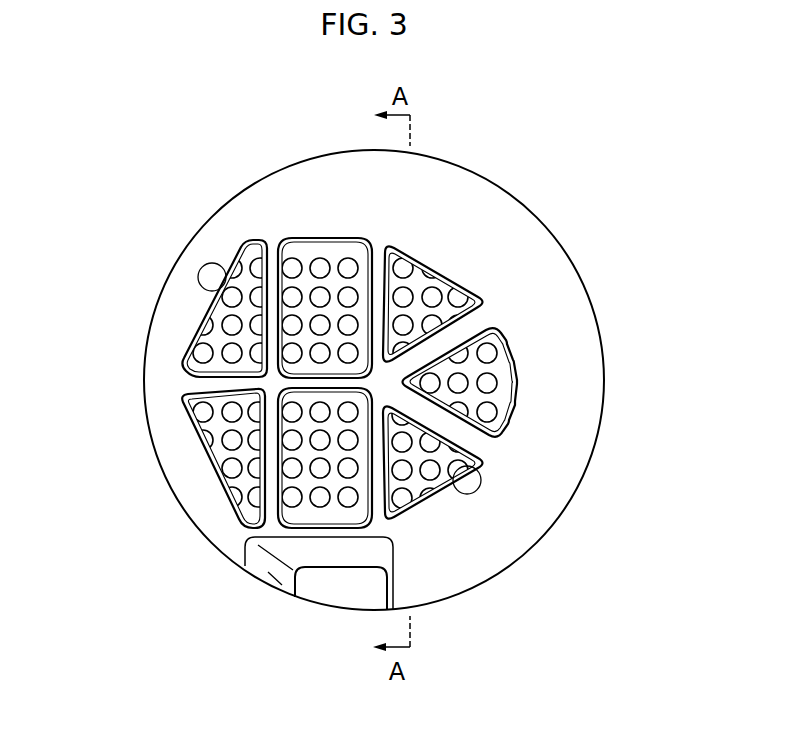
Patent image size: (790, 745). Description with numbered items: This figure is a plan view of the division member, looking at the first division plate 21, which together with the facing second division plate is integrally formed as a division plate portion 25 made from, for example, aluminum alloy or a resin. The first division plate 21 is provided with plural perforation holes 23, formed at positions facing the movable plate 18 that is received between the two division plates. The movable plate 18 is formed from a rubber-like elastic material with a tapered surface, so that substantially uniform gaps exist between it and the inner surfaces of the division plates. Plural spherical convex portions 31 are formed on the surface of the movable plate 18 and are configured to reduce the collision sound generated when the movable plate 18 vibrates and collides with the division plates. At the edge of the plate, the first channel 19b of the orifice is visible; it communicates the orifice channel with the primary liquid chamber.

The first division plate 21 is at (565, 355).
The division plate portion 25 is at (578, 250).
The movable plate 18 is at (193, 428).
The spherical convex portions 31 is at (198, 327).
The perforation holes 23 is at (201, 266).
The first channel 19b is at (282, 596).